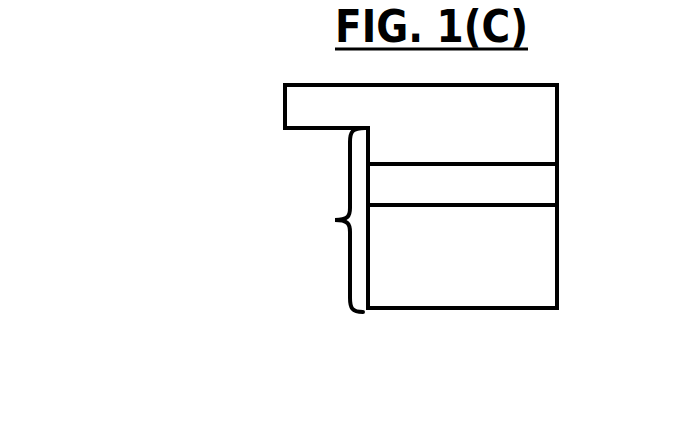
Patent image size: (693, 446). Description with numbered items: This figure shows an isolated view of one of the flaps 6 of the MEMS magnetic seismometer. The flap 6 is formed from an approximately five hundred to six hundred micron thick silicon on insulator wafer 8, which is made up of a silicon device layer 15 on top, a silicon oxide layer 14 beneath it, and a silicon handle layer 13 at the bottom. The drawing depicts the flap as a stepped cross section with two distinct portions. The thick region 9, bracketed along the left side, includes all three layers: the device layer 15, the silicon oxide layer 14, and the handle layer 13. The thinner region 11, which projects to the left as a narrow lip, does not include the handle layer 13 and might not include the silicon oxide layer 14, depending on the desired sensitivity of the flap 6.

The flap 6 is at (252, 258).
The silicon on insulator (SOI) wafer 8 is at (463, 330).
The thick region 9 is at (337, 220).
The thinner region 11 is at (268, 106).
The silicon handle layer 13 is at (543, 277).
The silicon oxide layer 14 is at (543, 185).
The silicon device layer 15 is at (543, 132).